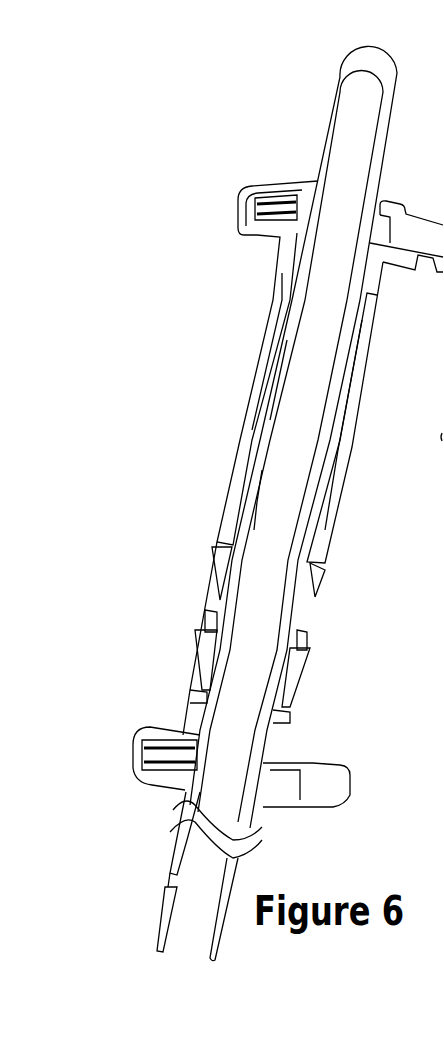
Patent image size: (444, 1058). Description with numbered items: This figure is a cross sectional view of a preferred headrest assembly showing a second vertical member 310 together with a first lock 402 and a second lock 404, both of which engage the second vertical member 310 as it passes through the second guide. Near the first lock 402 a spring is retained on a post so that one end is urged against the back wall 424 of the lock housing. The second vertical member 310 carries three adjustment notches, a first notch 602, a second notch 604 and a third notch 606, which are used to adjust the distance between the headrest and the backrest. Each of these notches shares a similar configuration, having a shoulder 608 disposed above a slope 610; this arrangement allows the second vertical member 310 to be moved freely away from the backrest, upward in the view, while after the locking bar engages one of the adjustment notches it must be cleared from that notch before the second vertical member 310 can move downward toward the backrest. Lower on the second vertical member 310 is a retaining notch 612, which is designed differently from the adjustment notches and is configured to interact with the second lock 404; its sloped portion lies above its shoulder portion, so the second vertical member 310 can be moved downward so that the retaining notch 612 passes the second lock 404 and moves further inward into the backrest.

The second vertical member 310 is at (258, 658).
The first lock 402 is at (257, 232).
The second lock 404 is at (308, 797).
The back wall 424 is at (252, 206).
The first notch 602 is at (310, 217).
The second notch 604 is at (277, 357).
The third notch 606 is at (257, 512).
The shoulder 608 is at (257, 502).
The slope 610 is at (255, 527).
The retaining notch 612 is at (170, 872).